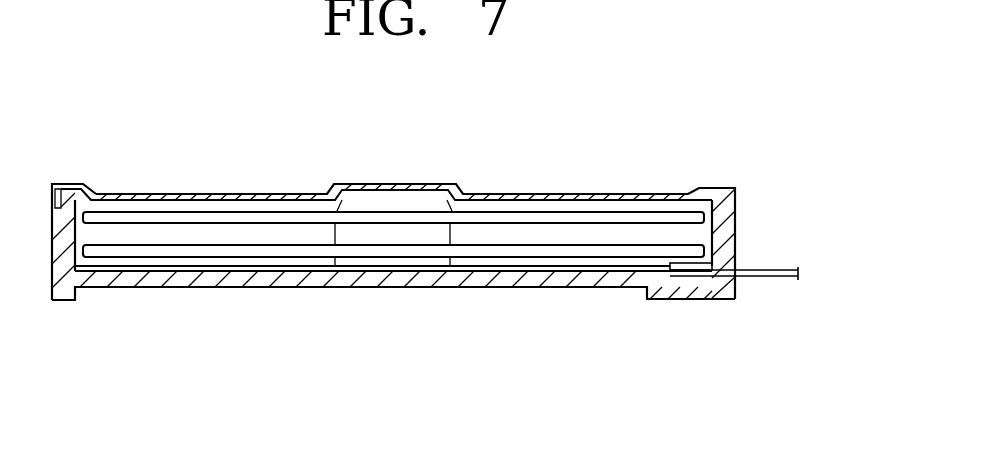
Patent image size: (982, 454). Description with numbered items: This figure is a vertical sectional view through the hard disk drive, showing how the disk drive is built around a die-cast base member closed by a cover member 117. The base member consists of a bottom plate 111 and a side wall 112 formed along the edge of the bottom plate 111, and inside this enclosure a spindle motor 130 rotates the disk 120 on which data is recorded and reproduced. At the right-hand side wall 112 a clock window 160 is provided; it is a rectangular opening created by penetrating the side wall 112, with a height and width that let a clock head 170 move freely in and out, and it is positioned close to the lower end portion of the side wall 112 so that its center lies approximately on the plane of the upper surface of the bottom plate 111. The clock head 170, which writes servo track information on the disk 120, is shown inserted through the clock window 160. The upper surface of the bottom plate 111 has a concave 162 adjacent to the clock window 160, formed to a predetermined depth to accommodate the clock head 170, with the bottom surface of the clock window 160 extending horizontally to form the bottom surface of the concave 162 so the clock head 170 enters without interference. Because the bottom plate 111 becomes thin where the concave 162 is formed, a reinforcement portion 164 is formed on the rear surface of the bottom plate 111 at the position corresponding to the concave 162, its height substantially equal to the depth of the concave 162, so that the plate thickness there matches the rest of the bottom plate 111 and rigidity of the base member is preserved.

The bottom plate 111 is at (523, 287).
The side wall 112 is at (735, 212).
The cover member 117 is at (249, 192).
The disk 120 is at (578, 252).
The spindle motor 130 is at (388, 266).
The clock window 160 is at (735, 280).
The concave 162 is at (683, 263).
The reinforcement portion 164 is at (665, 299).
The clock head 170 is at (782, 268).